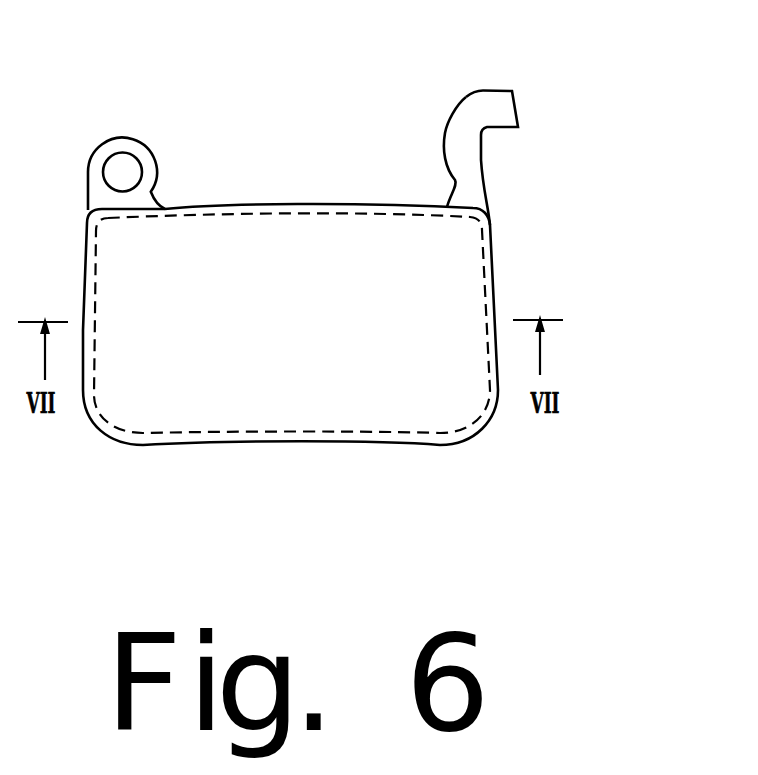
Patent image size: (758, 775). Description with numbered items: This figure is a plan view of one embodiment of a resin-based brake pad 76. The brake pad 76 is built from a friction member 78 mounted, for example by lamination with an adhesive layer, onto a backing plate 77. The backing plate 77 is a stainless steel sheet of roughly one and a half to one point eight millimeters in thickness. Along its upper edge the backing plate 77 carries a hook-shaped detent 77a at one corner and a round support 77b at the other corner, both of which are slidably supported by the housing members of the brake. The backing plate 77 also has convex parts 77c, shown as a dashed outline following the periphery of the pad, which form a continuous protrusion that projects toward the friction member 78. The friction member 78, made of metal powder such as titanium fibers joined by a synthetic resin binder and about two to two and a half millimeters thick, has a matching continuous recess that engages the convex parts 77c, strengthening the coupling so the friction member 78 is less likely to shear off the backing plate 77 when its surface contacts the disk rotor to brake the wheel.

The brake pad 76 is at (285, 169).
The backing plate 77 is at (472, 178).
The hook-shaped detent 77a is at (483, 105).
The round support 77b is at (134, 166).
The convex parts 77c is at (490, 292).
The friction member 78 is at (468, 263).